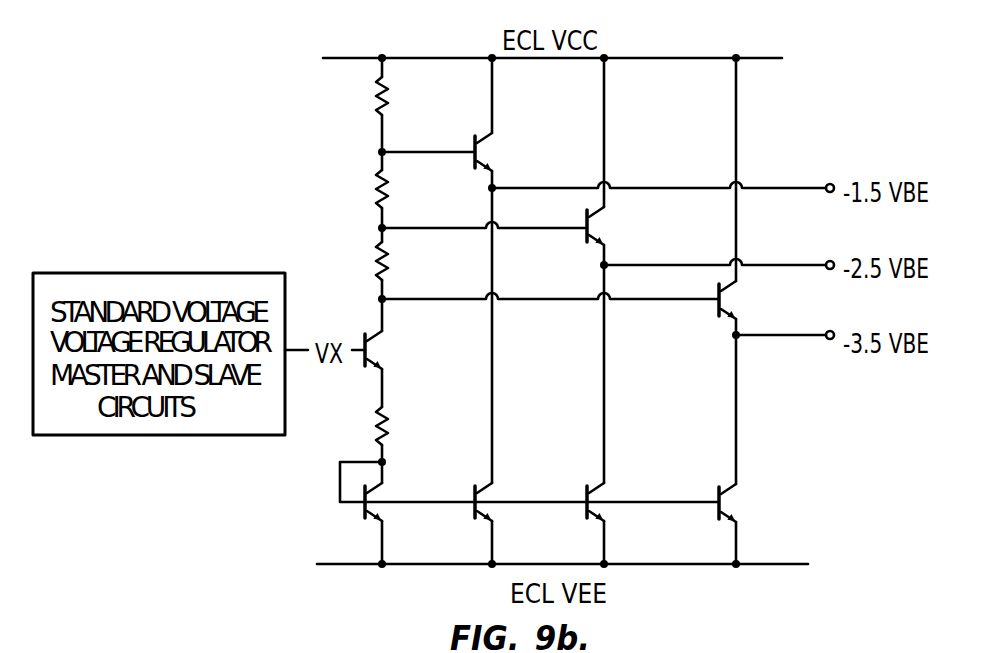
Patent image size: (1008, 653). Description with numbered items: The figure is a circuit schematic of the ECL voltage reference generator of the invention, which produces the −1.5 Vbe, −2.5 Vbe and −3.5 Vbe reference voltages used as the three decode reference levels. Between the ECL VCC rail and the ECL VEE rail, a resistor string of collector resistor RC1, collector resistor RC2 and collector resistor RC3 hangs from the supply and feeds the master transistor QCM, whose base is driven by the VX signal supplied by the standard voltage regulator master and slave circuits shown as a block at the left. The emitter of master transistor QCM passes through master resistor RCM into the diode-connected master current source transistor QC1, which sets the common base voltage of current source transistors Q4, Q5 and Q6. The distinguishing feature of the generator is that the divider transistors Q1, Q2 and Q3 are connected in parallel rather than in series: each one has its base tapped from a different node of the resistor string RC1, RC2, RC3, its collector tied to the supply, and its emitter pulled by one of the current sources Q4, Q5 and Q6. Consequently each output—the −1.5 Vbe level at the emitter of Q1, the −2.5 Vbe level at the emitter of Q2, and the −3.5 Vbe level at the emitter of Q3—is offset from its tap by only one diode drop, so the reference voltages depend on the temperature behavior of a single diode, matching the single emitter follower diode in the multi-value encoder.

The collector resistor RC1 is at (357, 96).
The collector resistor RC2 is at (357, 189).
The collector resistor RC3 is at (357, 260).
The master resistor RCM is at (404, 428).
The divider transistor Q1 is at (494, 152).
The divider transistor Q2 is at (610, 227).
The divider transistor Q3 is at (743, 300).
The current source transistor Q4 is at (502, 513).
The current source transistor Q5 is at (613, 513).
The current source transistor Q6 is at (746, 513).
The master transistor QCM is at (396, 352).
The master current source transistor QC1 is at (393, 513).